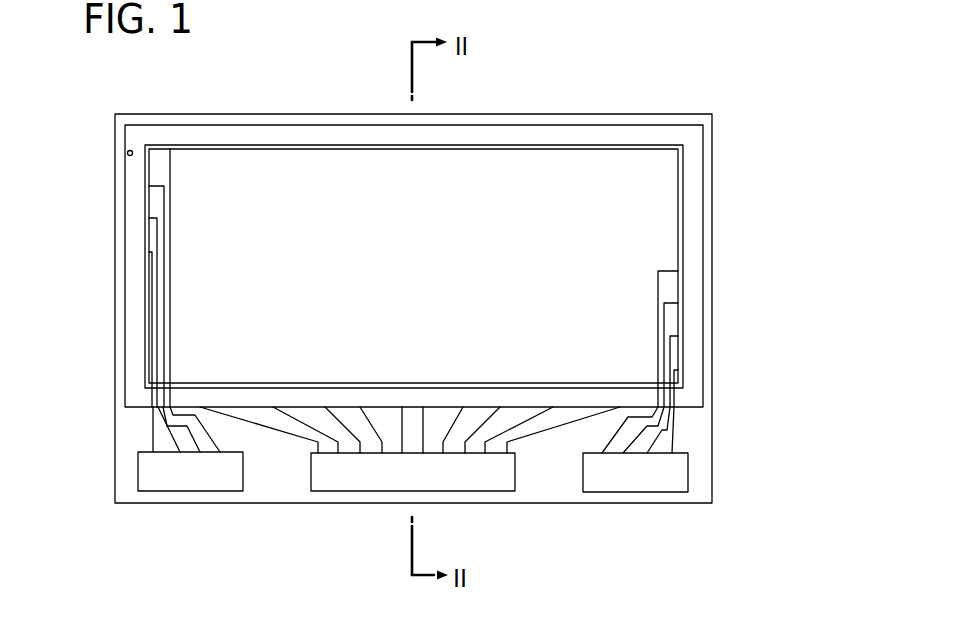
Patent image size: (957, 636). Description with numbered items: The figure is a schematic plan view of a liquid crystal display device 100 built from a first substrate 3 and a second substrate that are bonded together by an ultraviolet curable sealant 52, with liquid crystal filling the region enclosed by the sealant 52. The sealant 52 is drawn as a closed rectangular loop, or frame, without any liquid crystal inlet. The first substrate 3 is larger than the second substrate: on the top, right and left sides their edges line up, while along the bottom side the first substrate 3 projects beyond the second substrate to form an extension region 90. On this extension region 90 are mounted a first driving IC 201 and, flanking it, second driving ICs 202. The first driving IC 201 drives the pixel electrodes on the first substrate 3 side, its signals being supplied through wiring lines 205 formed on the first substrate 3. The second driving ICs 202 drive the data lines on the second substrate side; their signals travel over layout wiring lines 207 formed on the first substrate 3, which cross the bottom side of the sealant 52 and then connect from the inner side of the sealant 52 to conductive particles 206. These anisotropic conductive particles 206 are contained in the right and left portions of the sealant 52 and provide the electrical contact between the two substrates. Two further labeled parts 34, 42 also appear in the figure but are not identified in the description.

The liquid crystal display device 100 is at (504, 90).
The first substrate 3 is at (270, 115).
The extension region 90 is at (744, 468).
The sealant 52 is at (693, 165).
The first substrate 34 is at (638, 147).
The display region 42 is at (665, 230).
The conductive particles 206 is at (127, 153).
The layout wiring lines 207 is at (160, 332).
The wiring lines 205 is at (542, 434).
The first driving IC 201 is at (348, 475).
The second driving ICs 202 is at (187, 473).